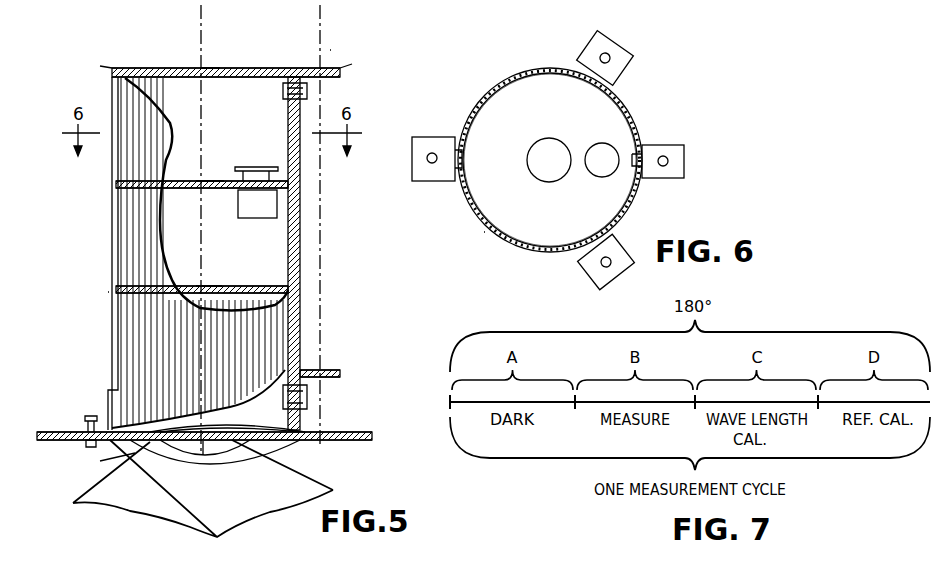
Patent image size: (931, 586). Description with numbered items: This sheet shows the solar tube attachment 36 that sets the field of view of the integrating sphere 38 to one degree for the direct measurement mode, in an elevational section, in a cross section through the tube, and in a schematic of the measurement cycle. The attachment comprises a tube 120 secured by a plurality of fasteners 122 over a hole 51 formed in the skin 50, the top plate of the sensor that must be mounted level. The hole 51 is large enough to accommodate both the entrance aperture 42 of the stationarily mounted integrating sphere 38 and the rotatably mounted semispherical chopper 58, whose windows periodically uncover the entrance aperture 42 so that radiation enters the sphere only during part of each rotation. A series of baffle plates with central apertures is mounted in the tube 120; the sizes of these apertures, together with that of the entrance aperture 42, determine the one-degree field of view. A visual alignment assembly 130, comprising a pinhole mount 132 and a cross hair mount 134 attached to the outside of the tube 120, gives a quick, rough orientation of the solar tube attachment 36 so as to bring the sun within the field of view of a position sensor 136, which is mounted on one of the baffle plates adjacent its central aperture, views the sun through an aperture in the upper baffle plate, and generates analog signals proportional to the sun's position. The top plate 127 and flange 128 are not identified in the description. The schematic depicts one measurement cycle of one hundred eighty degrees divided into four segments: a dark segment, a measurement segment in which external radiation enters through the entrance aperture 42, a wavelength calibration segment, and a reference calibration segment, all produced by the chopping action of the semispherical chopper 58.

In FIG. 5, the tube 120 is at (118, 232).
In FIG. 6, the tube 120 is at (500, 80).
In FIG. 5, the fasteners 122 is at (78, 430).
In FIG. 6, the fasteners 122 is at (430, 134).
In FIG. 5, the top plate 127 is at (256, 70).
In FIG. 5, the flange 128 is at (110, 70).
In FIG. 5, the visual alignment assembly 130 is at (336, 46).
In FIG. 5, the pinhole mount 132 is at (340, 68).
In FIG. 5, the cross hair mount 134 is at (336, 372).
In FIG. 6, the cross hair mount 134 is at (672, 182).
In FIG. 5, the position sensor 136 is at (248, 166).
In FIG. 6, the position sensor 136 is at (603, 148).
In FIG. 5, the solar tube attachment 36 is at (102, 293).
In FIG. 6, the solar tube attachment 36 is at (480, 234).
In FIG. 5, the integrating sphere 38 is at (232, 446).
In FIG. 5, the entrance aperture 42 is at (174, 446).
In FIG. 5, the skin 50 is at (350, 432).
In FIG. 5, the hole 51 is at (100, 461).
In FIG. 5, the semispherical chopper 58 is at (330, 470).